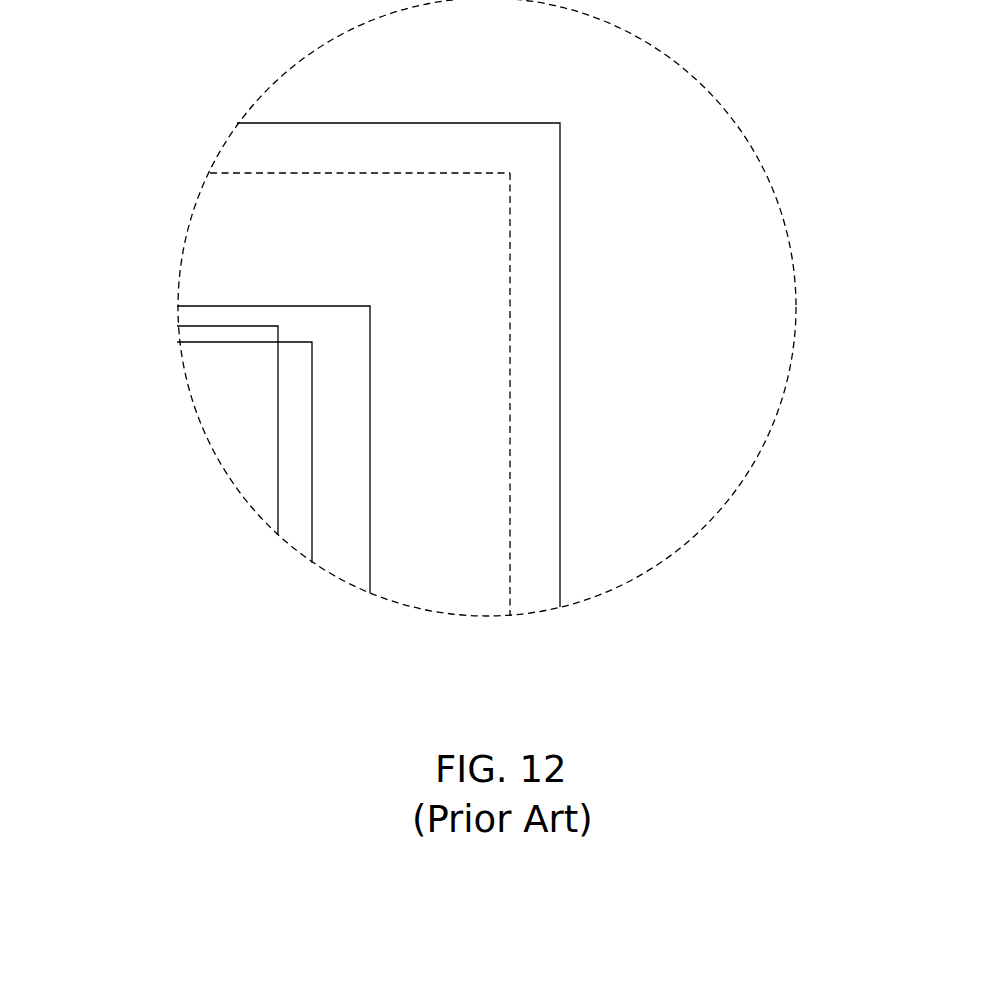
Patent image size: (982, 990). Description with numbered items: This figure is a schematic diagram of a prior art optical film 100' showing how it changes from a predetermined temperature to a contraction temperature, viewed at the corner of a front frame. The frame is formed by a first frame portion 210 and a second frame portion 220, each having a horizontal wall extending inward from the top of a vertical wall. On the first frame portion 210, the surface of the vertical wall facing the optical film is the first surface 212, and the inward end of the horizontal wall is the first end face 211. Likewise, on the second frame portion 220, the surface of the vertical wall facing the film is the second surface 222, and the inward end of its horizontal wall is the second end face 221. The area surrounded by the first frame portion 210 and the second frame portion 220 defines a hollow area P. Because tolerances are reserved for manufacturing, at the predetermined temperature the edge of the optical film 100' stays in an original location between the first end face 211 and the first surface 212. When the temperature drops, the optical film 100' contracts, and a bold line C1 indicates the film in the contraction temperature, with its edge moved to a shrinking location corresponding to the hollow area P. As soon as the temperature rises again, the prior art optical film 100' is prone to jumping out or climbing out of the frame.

The first frame portion 210 is at (480, 442).
The first surface 212 is at (510, 513).
The second surface 222 is at (245, 173).
The second frame portion 220 is at (231, 214).
The optical film of a prior art 100' is at (329, 449).
The second end face 221 is at (203, 340).
The first end face 211 is at (312, 527).
The bold line C1 is at (203, 338).
The hollow area P is at (290, 378).